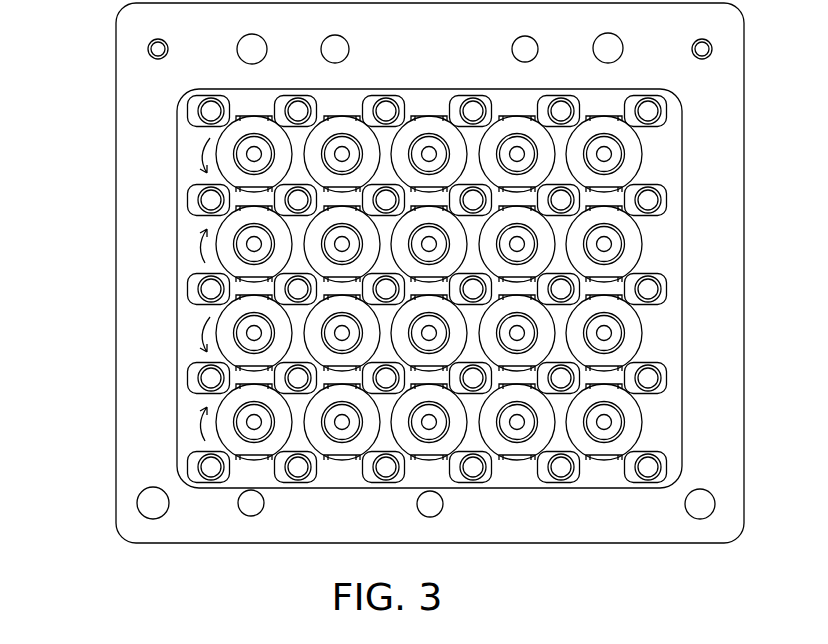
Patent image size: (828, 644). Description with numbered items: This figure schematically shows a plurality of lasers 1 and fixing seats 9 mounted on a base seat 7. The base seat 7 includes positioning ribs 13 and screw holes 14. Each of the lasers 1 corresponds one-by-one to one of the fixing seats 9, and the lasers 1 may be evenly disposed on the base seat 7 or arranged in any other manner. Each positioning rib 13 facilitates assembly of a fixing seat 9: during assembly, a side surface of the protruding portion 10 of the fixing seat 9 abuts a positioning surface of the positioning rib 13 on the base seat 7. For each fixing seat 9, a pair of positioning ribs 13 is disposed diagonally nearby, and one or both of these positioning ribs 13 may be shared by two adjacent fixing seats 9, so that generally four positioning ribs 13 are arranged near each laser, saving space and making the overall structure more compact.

The laser 1 is at (255, 154).
The base seat 7 is at (145, 117).
The fixing seat 9 is at (228, 233).
The protruding portion 10 is at (237, 278).
The positioning rib 13 is at (198, 298).
The screw hole 14 is at (207, 378).